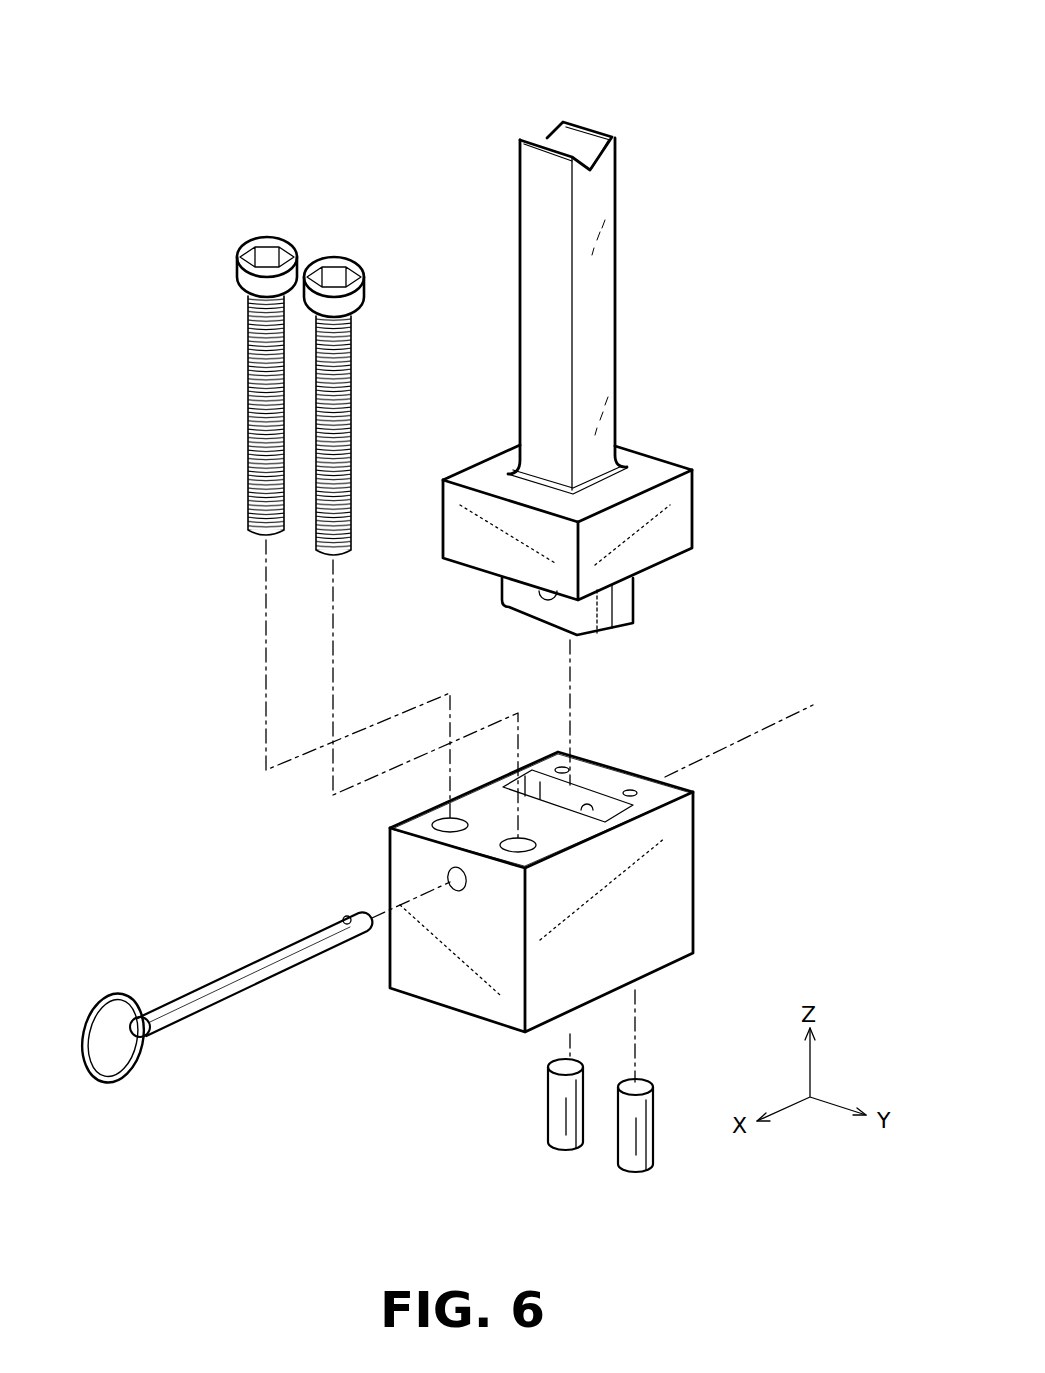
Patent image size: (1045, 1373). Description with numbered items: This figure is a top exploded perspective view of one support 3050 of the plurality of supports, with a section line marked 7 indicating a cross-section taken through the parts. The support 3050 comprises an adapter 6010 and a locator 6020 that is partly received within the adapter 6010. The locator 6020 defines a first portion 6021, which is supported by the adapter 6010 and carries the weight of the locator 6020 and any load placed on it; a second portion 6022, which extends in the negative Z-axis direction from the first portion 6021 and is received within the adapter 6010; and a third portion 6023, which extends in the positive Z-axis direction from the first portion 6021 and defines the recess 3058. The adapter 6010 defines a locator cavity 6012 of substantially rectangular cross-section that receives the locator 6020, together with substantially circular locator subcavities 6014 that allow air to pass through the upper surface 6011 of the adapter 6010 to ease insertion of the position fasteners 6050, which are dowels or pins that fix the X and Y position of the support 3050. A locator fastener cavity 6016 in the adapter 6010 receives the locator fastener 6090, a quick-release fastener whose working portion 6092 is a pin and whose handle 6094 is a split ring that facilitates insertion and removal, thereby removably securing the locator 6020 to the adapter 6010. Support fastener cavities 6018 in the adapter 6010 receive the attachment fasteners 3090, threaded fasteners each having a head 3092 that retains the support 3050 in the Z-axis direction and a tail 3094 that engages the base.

The section line 7- 7 is at (570, 140).
The support 3050 is at (311, 103).
The attachment fastener 3090 is at (200, 341).
The head 3092 is at (238, 275).
The tail 3094 is at (313, 407).
The recess 3058 is at (585, 140).
The locator 6020 is at (655, 351).
The third portion 6023 is at (626, 279).
The first portion 6021 is at (680, 521).
The second portion 6022 is at (633, 582).
The adapter 6010 is at (752, 877).
The upper surface 6011 is at (567, 838).
The locator cavity 6012 is at (612, 806).
The locator subcavity 6014 is at (629, 790).
The locator fastener cavity 6016 is at (455, 888).
The support fastener cavity 6018 is at (434, 825).
The locator fastener 6090 is at (195, 948).
The working portion 6092 is at (290, 970).
The handle 6094 is at (125, 1075).
The position fastener 6050 is at (628, 1175).